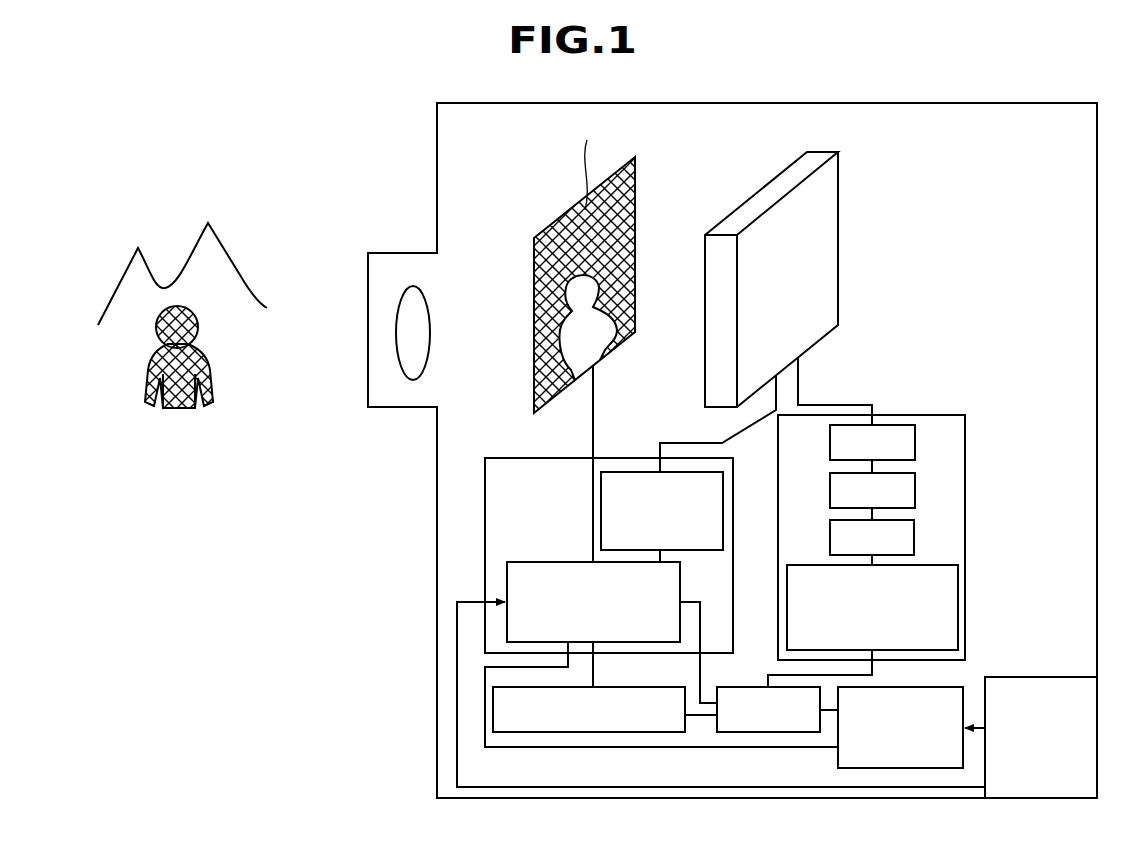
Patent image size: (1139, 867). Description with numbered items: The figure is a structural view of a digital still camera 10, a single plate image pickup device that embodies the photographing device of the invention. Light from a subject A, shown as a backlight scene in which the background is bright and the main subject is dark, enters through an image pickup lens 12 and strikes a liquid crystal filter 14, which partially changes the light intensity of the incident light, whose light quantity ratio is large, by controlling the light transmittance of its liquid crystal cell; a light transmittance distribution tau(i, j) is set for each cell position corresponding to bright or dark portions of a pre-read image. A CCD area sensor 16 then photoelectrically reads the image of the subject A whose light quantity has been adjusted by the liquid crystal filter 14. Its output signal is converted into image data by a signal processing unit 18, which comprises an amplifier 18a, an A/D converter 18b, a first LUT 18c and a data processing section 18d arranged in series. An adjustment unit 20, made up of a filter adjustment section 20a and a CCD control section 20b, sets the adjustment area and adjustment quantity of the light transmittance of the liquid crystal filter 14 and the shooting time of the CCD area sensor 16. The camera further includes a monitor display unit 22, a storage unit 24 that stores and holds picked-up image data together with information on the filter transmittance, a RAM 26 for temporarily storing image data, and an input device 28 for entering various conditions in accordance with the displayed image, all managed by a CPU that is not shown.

The digital still camera 10 is at (361, 150).
The subject A is at (227, 248).
The image pickup lens 12 is at (413, 290).
The liquid crystal filter 14 is at (533, 270).
The CCD area sensor 16 is at (838, 243).
The signal processing unit 18 is at (915, 467).
The amplifier 18a is at (915, 442).
The A/D converter 18b is at (915, 490).
The first LUT 18c is at (914, 533).
The data processing section 18d is at (958, 607).
The adjustment unit 20 is at (480, 529).
The filter adjustment section 20a is at (593, 579).
The CCD control section 20b is at (632, 472).
The monitor display unit 22 is at (963, 687).
The storage unit 24 is at (603, 732).
The RAM 26 is at (747, 732).
The input device 28 is at (1073, 677).